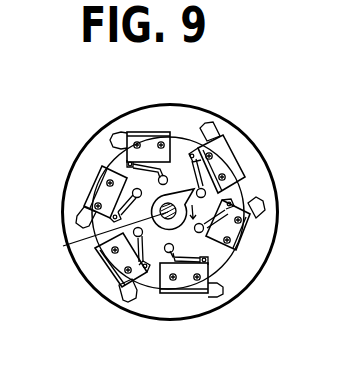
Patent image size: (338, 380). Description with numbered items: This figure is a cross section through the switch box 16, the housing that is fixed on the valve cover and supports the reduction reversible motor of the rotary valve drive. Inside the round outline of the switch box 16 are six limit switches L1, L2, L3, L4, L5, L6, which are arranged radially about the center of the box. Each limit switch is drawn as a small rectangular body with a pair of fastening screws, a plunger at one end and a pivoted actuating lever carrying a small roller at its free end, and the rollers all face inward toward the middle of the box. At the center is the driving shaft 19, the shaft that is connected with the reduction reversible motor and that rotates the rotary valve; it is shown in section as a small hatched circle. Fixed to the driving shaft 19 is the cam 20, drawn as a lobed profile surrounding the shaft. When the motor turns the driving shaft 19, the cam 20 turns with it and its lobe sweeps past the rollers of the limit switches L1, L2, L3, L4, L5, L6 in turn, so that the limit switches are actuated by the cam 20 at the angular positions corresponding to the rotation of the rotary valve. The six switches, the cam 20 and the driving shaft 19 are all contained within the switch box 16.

The limit switch L1 is at (155, 133).
The limit switch L2 is at (223, 157).
The limit switch L3 is at (243, 240).
The limit switch L4 is at (185, 283).
The limit switch L5 is at (108, 263).
The limit switch L6 is at (90, 187).
The switch box 16 is at (238, 268).
The driving shaft 19 is at (168, 212).
The cam 20 is at (99, 237).